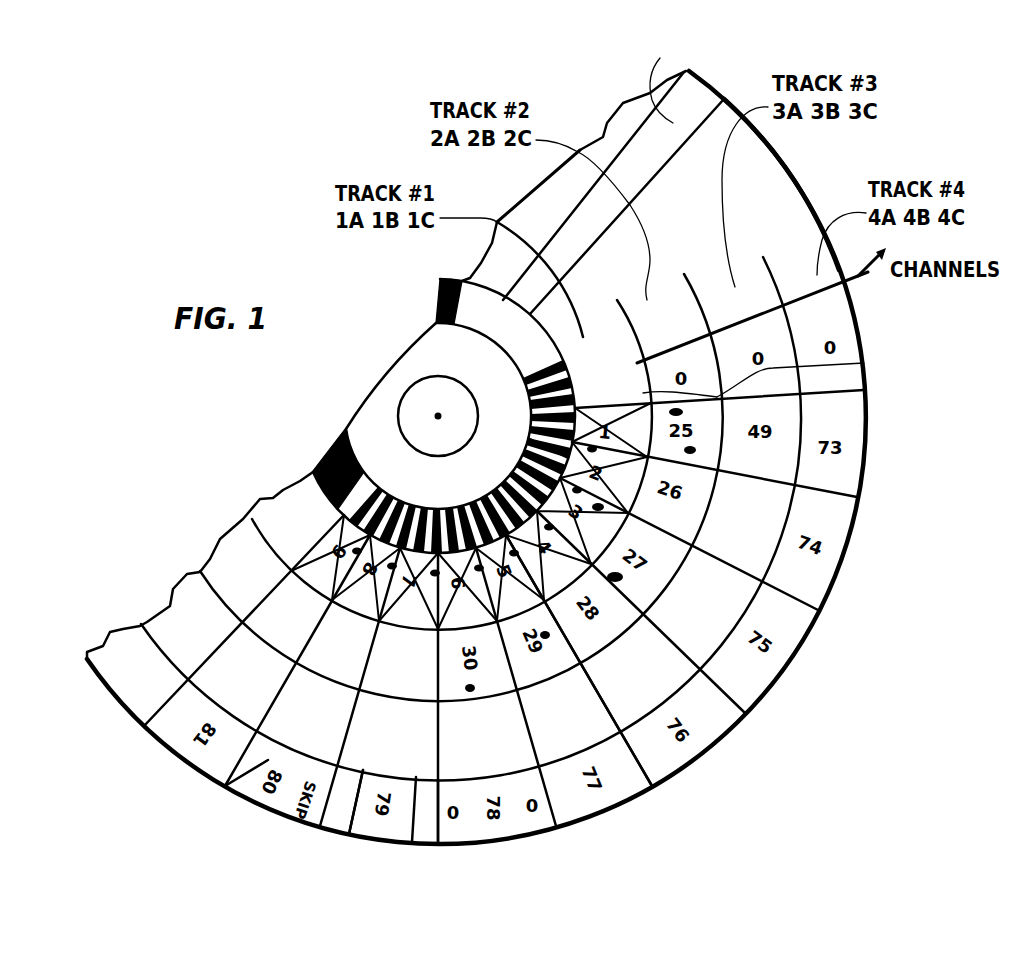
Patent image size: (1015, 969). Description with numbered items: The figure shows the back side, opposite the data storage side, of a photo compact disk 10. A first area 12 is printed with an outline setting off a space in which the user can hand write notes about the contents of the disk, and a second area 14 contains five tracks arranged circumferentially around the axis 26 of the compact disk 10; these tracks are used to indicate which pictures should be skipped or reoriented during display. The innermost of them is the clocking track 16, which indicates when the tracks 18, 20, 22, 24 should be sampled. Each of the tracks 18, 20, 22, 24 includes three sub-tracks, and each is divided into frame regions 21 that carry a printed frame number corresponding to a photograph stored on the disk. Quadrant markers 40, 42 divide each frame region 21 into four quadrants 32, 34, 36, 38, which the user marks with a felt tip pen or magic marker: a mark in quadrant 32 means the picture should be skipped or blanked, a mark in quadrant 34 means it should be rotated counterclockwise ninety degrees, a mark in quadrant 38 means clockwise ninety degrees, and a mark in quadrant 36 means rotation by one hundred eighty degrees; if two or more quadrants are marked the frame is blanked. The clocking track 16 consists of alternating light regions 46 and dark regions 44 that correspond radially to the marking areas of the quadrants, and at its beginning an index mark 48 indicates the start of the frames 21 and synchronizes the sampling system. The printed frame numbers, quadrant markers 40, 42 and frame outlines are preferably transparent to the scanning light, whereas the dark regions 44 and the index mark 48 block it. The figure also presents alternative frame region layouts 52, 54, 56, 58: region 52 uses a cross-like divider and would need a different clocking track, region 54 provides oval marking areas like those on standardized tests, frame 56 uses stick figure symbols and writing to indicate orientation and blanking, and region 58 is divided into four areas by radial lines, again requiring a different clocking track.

The photo compact disk 10 is at (788, 740).
The first area 12 is at (742, 50).
The second area 14 is at (827, 185).
The clocking track 16 is at (548, 372).
The track 18 is at (596, 331).
The track 20 is at (674, 298).
The frame region 21 is at (862, 363).
The track 22 is at (721, 283).
The track 24 is at (786, 261).
The axis 26 is at (437, 417).
The quadrant 32 is at (643, 344).
The quadrant 34 is at (695, 452).
The quadrant 36 is at (678, 498).
The quadrant 38 is at (534, 431).
The quadrant marker 40 is at (561, 378).
The quadrant marker 42 is at (643, 393).
The dark region 44 is at (445, 514).
The light region 46 is at (524, 459).
The index mark 48 is at (530, 402).
The frame region 52 is at (597, 822).
The frame region 54 is at (478, 846).
The frame region 56 is at (250, 803).
The frame region 58 is at (373, 832).